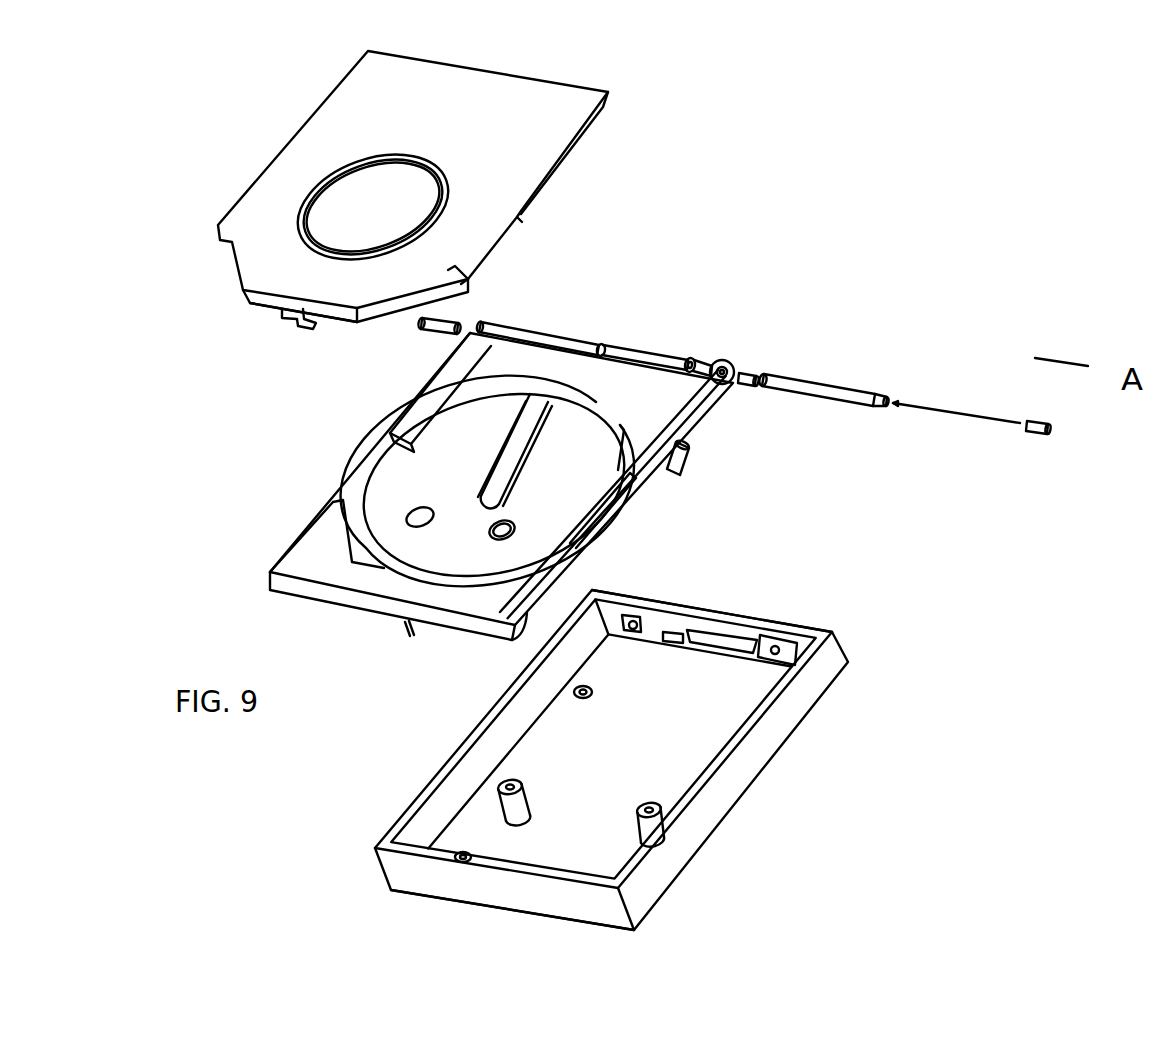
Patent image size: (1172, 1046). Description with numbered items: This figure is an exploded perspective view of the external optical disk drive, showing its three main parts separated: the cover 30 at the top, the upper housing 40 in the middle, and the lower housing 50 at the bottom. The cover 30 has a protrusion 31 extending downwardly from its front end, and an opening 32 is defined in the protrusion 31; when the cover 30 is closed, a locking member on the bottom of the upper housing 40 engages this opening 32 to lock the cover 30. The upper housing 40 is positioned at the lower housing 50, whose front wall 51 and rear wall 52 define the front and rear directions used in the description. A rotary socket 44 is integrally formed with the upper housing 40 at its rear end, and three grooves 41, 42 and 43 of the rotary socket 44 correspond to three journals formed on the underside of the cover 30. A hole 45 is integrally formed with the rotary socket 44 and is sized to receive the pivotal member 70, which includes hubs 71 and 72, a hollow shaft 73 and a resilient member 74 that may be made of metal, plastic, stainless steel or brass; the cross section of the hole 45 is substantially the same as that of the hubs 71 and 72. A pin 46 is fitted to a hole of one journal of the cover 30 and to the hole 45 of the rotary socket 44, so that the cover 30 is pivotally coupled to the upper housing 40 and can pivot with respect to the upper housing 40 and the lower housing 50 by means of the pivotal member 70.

The cover 30 is at (574, 148).
The protrusion 31 is at (255, 302).
The opening 32 is at (300, 314).
The upper housing 40 is at (451, 422).
The groove 41 is at (693, 358).
The groove 42 is at (603, 345).
The groove 43 is at (497, 327).
The rotary socket 44 is at (583, 293).
The hole 45 is at (735, 363).
The pin 46 is at (425, 335).
The lower housing 50 is at (569, 743).
The front wall 51 is at (448, 882).
The rear wall 52 is at (728, 610).
The pivotal member 70 is at (883, 304).
The hub 71 is at (747, 388).
The hub 72 is at (1038, 438).
The hollow shaft 73 is at (835, 382).
The resilient member 74 is at (967, 410).